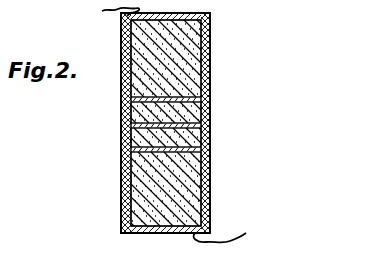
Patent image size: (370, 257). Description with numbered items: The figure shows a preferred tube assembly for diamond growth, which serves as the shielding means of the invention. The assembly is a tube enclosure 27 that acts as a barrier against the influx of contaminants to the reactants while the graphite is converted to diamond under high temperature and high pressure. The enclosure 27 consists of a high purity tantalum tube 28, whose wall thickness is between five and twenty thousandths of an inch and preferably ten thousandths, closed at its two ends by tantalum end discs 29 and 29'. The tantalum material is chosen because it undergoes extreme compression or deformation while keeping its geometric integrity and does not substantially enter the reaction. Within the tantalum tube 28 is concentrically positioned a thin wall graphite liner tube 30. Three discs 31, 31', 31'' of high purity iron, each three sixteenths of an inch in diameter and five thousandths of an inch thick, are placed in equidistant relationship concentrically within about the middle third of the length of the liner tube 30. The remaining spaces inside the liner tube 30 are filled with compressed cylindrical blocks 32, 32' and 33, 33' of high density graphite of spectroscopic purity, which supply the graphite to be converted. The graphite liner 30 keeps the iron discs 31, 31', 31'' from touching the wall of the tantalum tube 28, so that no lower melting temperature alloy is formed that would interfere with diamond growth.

The tube enclosure 27 is at (208, 187).
The tantalum tube 28 is at (205, 152).
The tantalum end disc 29 is at (105, 20).
The tantalum end disc 29' is at (231, 232).
The graphite liner tube 30 is at (210, 53).
The iron disc 31 is at (194, 96).
The iron disc 31' is at (196, 105).
The iron disc 31'' is at (199, 135).
The compressed cylindrical graphite block 32 is at (134, 68).
The compressed cylindrical graphite block 32' is at (133, 189).
The compressed cylindrical graphite block 33 is at (134, 133).
The compressed cylindrical graphite block 33' is at (133, 159).